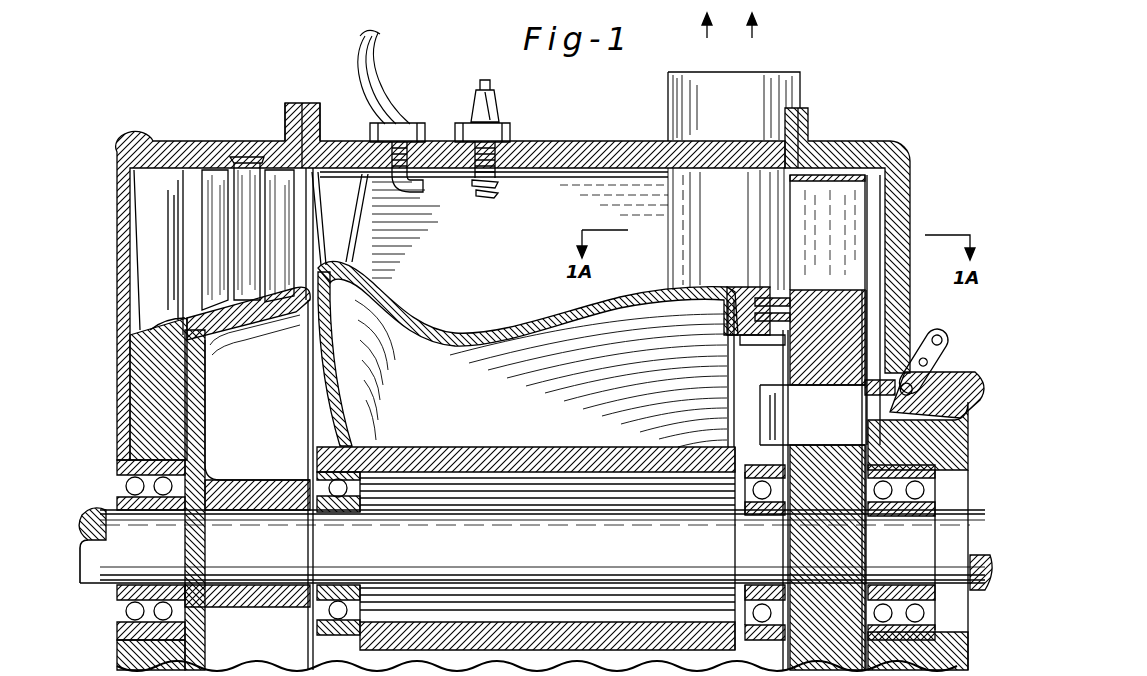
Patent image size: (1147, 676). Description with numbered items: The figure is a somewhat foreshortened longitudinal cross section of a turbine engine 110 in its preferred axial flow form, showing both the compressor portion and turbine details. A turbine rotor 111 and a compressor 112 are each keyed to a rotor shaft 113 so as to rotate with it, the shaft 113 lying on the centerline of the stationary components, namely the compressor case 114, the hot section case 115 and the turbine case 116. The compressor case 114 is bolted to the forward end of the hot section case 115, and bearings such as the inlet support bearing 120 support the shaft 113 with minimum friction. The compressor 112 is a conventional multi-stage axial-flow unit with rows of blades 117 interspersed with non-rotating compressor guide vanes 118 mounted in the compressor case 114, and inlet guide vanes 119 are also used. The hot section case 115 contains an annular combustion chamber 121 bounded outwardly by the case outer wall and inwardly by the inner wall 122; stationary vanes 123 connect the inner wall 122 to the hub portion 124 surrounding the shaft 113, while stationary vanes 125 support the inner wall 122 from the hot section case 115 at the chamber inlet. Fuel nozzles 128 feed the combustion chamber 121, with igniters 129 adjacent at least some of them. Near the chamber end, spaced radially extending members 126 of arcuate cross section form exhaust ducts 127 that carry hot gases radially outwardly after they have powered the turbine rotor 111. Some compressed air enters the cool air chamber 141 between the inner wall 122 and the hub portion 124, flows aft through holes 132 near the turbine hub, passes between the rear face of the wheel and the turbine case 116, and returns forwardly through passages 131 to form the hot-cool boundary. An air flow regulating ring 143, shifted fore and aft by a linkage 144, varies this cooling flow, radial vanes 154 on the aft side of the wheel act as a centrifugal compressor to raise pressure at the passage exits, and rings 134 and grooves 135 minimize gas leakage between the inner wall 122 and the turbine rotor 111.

The turbine engine 110 is at (268, 58).
The turbine rotor 111 is at (850, 316).
The compressor 112 is at (203, 412).
The rotor shaft 113 is at (213, 562).
The compressor case 114 is at (157, 152).
The hot section case 115 is at (583, 150).
The turbine case 116 is at (847, 153).
The blades 117 is at (298, 330).
The compressor guide vanes 118 is at (244, 165).
The inlet guide vanes 119 is at (152, 214).
The inlet support bearing 120 is at (120, 468).
The annular combustion chamber 121 is at (482, 274).
The inner wall 122 is at (516, 331).
The stationary vanes 123 is at (372, 369).
The hub portion 124 is at (491, 457).
The stationary vanes 125 is at (347, 230).
The radially extending members 126 is at (708, 186).
The exhaust ducts 127 is at (745, 80).
The fuel nozzles 128 is at (412, 203).
The igniters 129 is at (500, 186).
The passages 131 is at (826, 278).
The holes 132 is at (852, 429).
The rings 134 is at (764, 298).
The grooves 135 is at (762, 313).
The cool air chamber 141 is at (537, 422).
The air flow regulating ring 143 is at (880, 412).
The linkage 144 is at (930, 334).
The radial vanes 154 is at (878, 233).